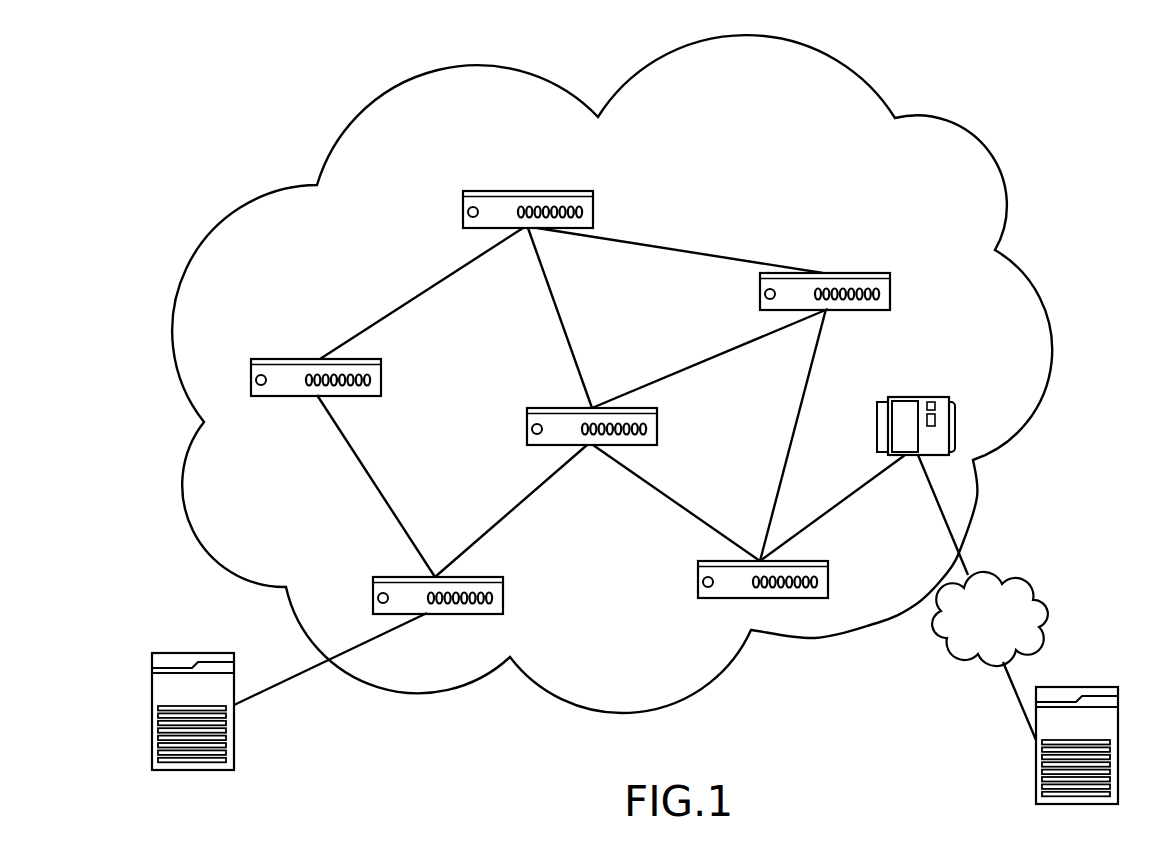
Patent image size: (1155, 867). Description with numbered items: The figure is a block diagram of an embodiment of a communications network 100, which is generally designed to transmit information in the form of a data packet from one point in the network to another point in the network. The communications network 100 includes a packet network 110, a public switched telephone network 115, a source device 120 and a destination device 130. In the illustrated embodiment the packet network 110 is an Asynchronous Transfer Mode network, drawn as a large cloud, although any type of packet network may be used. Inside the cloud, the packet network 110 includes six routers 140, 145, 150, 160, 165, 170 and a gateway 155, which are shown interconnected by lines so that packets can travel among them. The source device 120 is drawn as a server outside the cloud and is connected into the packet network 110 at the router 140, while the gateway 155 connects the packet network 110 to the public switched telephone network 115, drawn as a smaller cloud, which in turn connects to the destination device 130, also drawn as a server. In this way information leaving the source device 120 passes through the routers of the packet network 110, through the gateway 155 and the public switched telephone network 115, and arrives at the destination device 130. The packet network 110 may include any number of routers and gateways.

The communications network 100 is at (748, 698).
The packet network 110 is at (865, 73).
The public switched telephone network 115 is at (1013, 570).
The source device 120 is at (162, 653).
The destination device 130 is at (1080, 687).
The router 140 is at (503, 598).
The router 145 is at (527, 429).
The router 150 is at (725, 597).
The gateway 155 is at (915, 397).
The router 160 is at (287, 359).
The router 165 is at (498, 191).
The router 170 is at (846, 273).